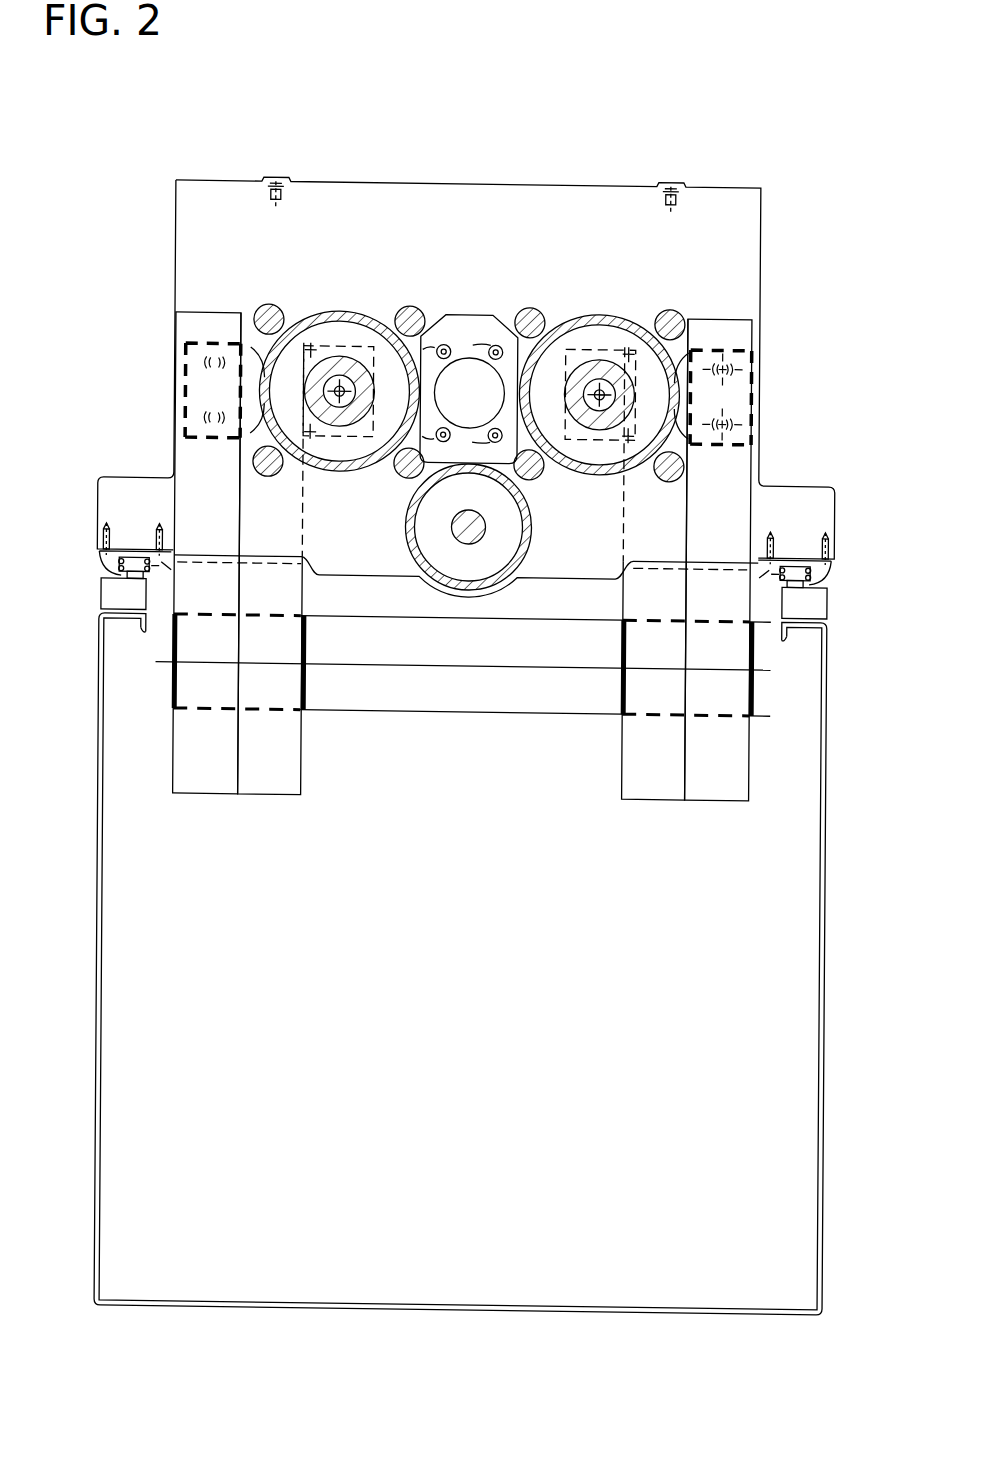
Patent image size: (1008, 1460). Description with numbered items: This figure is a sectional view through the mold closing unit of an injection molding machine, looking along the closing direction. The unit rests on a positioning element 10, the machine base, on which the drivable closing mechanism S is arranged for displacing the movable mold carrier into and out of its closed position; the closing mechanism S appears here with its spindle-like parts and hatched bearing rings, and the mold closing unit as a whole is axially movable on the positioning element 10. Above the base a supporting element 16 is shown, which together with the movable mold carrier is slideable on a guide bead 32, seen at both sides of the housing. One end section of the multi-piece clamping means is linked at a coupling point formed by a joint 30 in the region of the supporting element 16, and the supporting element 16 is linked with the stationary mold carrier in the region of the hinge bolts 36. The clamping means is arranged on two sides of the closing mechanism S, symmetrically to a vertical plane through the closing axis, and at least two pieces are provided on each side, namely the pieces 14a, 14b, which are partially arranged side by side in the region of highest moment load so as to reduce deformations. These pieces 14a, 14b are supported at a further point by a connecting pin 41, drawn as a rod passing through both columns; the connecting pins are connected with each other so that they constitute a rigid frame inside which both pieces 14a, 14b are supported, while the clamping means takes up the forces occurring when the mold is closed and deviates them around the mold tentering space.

The positioning element 10 is at (100, 1015).
The piece of the clamping means 14a is at (277, 766).
The piece of the clamping means 14b is at (200, 767).
The supporting element 16 is at (477, 267).
The joint 30 is at (768, 349).
The guide bead 32 is at (123, 585).
The hinge bolts 36 is at (752, 401).
The connecting pin 41 is at (467, 683).
The closing mechanism S is at (317, 325).